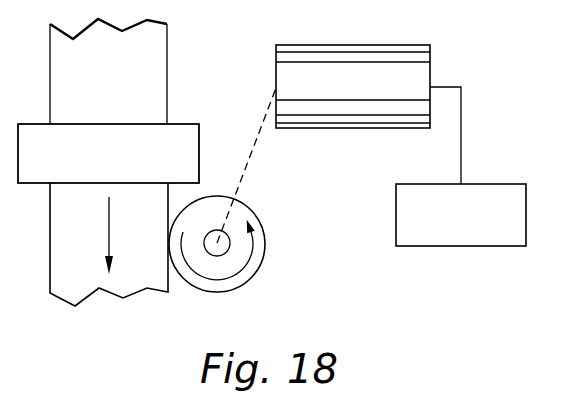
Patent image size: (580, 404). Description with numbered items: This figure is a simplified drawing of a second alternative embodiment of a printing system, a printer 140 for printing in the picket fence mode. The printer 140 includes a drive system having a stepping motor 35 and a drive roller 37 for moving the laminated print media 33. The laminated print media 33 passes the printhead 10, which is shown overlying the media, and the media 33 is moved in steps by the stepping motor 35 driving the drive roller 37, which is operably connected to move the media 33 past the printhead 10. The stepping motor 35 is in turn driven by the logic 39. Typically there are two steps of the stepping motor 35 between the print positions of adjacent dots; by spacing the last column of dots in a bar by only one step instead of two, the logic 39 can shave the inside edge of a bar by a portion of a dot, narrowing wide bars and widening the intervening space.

The printhead 10 is at (200, 148).
The laminated print media 33 is at (158, 52).
The stepping motor 35 is at (427, 66).
The drive roller 37 is at (265, 237).
The logic 39 is at (502, 184).
The printer 140 is at (365, 268).